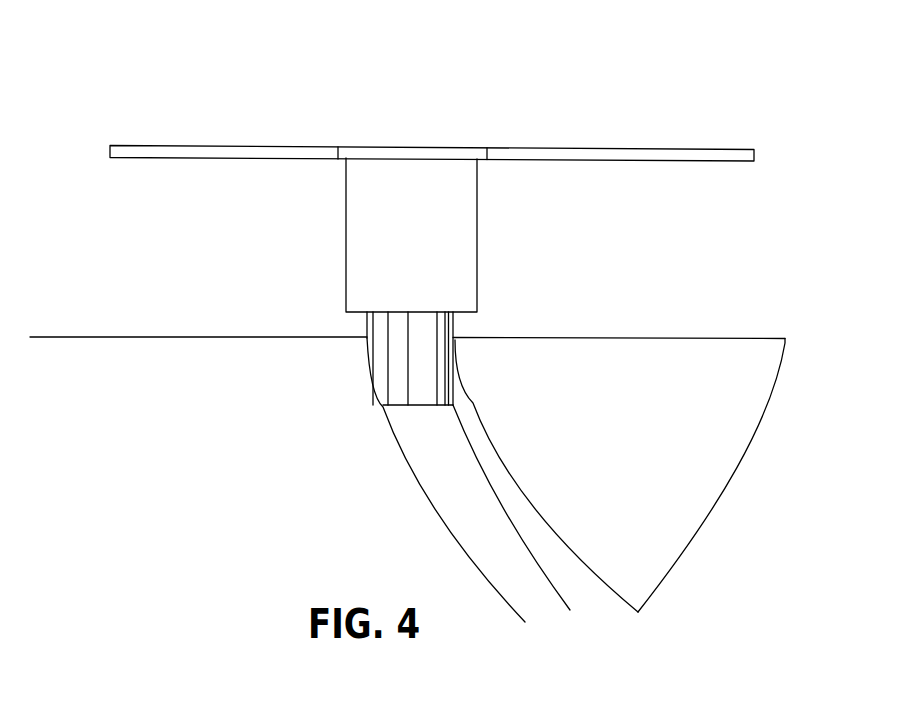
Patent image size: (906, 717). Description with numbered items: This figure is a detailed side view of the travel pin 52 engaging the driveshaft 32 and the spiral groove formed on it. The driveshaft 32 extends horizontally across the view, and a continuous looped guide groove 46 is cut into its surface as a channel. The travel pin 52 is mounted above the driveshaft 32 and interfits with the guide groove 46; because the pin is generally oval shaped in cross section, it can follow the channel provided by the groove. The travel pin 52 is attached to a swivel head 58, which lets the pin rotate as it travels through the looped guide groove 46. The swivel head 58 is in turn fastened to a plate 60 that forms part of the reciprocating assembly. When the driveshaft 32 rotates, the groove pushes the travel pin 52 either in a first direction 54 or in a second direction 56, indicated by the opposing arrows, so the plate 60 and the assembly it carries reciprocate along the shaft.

The driveshaft 32 is at (88, 355).
The continuous looped guide groove 46 is at (470, 528).
The travel pin 52 is at (412, 348).
The first direction 54 is at (697, 269).
The second direction 56 is at (62, 265).
The swivel head 58 is at (440, 220).
The plate 60 is at (512, 151).